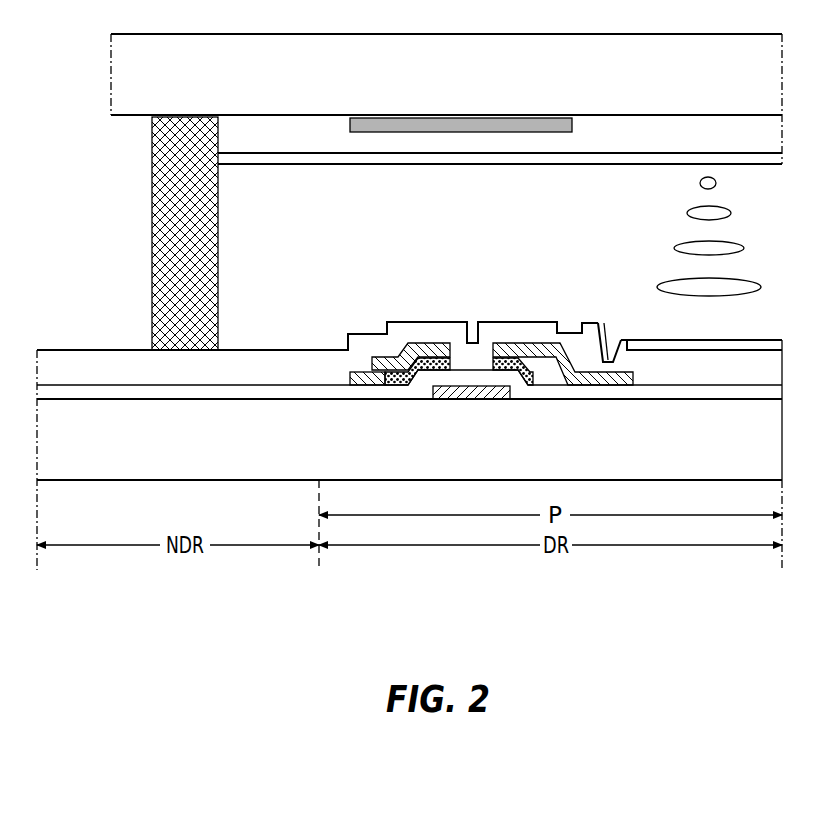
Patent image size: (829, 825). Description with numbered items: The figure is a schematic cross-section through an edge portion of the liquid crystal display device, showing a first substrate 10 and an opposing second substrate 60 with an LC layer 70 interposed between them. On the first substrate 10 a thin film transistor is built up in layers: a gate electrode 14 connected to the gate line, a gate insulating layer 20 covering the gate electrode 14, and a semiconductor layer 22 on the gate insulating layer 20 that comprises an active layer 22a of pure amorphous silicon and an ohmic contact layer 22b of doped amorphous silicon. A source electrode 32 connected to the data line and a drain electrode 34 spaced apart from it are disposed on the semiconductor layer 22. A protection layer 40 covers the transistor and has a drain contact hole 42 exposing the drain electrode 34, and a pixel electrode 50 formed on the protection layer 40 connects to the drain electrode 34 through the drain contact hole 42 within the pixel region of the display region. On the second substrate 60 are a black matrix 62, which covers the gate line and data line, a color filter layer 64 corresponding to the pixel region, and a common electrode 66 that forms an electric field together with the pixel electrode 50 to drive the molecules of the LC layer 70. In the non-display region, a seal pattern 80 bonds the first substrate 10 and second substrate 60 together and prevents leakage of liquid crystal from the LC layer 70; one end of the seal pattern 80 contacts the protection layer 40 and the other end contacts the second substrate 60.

The first substrate 10 is at (91, 451).
The gate electrode 14 is at (472, 400).
The gate insulating layer 20 is at (582, 393).
The semiconductor layer 22 is at (441, 419).
The active layer 22a is at (408, 387).
The ohmic contact layer 22b is at (388, 387).
The source electrode 32 is at (428, 342).
The drain electrode 34 is at (517, 342).
The protection layer 40 is at (370, 322).
The drain contact hole 42 is at (608, 336).
The pixel electrode 50 is at (760, 342).
The second substrate 60 is at (156, 83).
The black matrix 62 is at (460, 125).
The color filter layer 64 is at (598, 130).
The common electrode 66 is at (678, 162).
The LC layer 70 is at (318, 208).
The seal pattern 80 is at (220, 240).